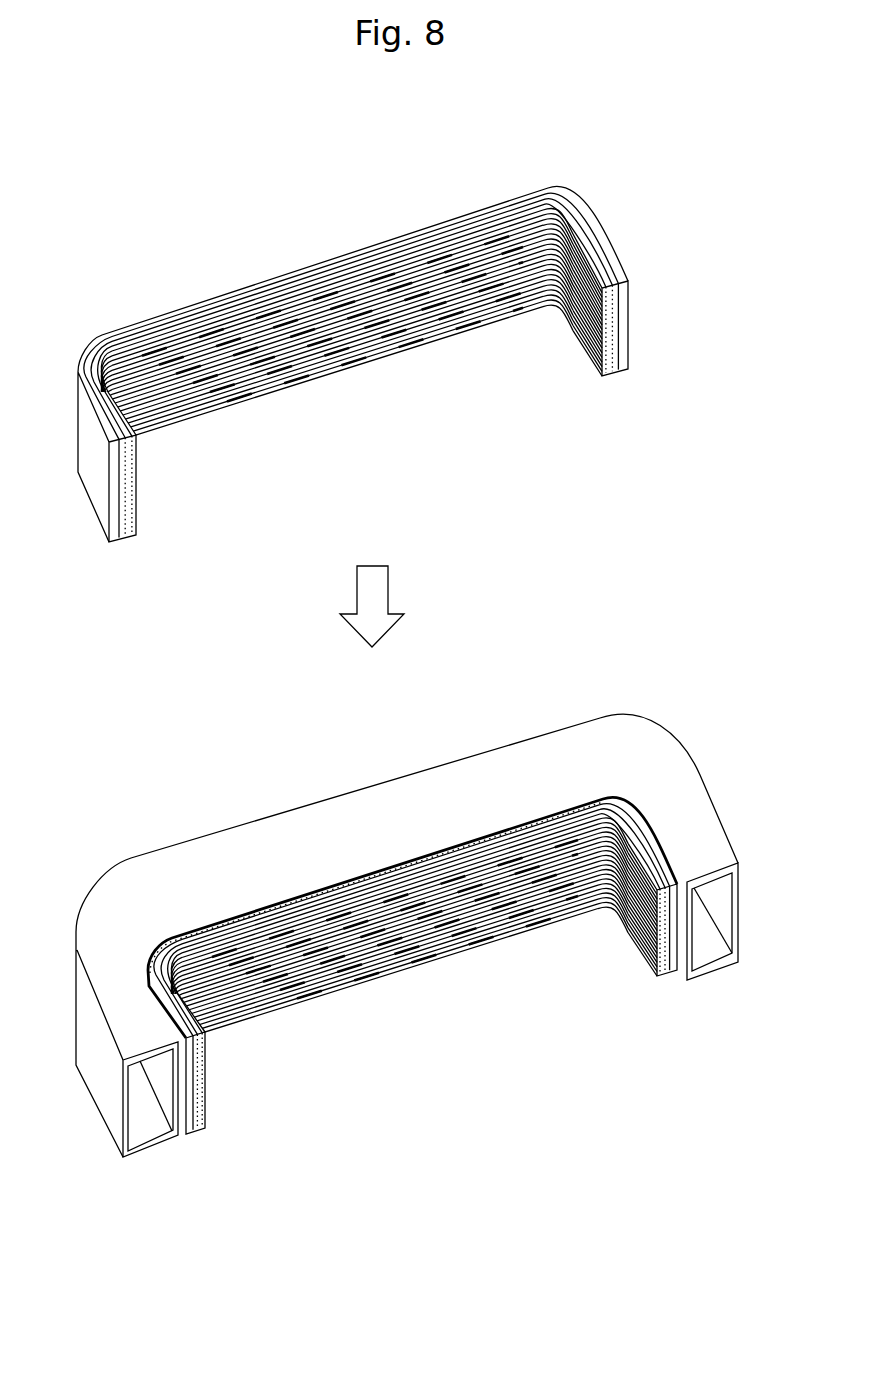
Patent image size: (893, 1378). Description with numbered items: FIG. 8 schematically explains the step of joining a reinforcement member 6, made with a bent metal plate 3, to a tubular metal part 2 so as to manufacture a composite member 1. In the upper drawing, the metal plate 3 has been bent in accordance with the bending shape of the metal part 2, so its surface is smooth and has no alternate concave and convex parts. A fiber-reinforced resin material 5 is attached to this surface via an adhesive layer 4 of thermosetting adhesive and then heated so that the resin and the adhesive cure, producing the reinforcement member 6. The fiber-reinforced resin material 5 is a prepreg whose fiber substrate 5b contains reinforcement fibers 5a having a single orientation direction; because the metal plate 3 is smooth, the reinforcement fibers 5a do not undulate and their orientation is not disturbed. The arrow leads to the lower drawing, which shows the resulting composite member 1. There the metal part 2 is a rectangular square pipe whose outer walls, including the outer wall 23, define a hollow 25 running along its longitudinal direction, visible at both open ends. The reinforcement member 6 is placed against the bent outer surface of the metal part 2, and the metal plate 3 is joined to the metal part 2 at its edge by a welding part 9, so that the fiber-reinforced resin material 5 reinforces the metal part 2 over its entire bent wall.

The composite member 1 is at (701, 689).
The metal part 2 is at (566, 752).
The metal plate 3 is at (484, 217).
The adhesive layer 4 is at (426, 246).
The fiber-reinforced resin material 5 is at (588, 348).
The reinforcement fibers 5a is at (250, 385).
The fiber substrate 5b is at (190, 452).
The reinforcement member 6 is at (556, 161).
The welding part 9 is at (318, 893).
The outer wall 23 is at (439, 818).
The hollow 25 is at (148, 1130).